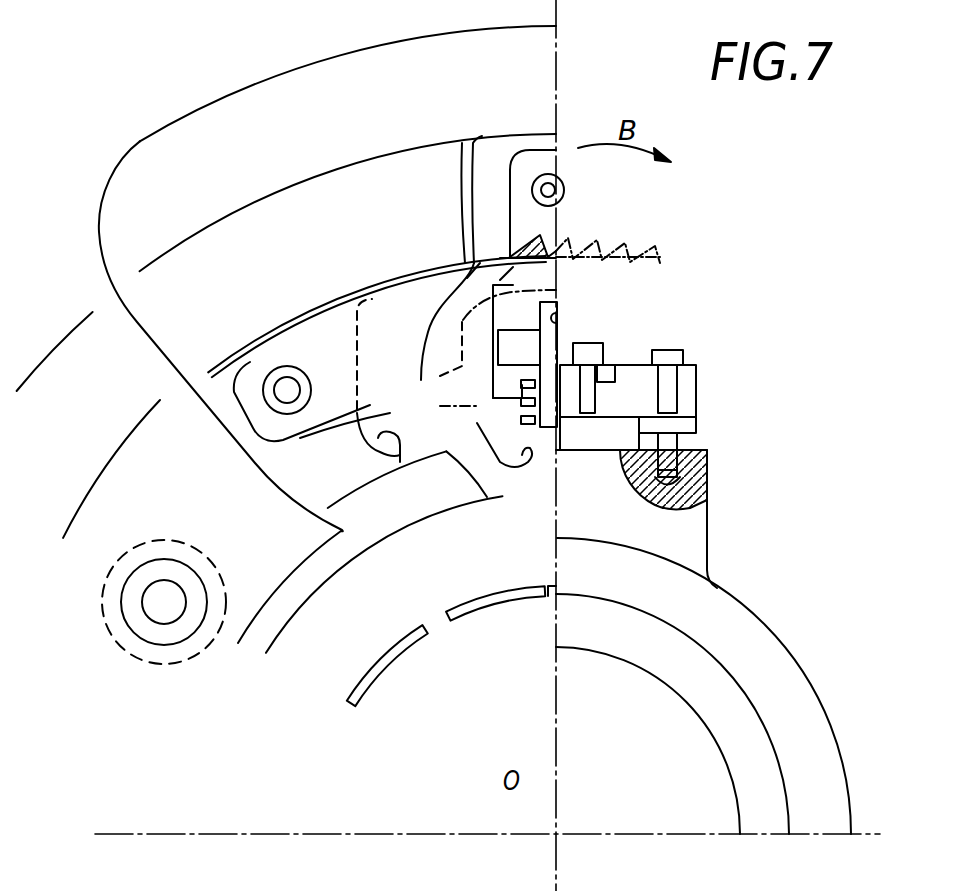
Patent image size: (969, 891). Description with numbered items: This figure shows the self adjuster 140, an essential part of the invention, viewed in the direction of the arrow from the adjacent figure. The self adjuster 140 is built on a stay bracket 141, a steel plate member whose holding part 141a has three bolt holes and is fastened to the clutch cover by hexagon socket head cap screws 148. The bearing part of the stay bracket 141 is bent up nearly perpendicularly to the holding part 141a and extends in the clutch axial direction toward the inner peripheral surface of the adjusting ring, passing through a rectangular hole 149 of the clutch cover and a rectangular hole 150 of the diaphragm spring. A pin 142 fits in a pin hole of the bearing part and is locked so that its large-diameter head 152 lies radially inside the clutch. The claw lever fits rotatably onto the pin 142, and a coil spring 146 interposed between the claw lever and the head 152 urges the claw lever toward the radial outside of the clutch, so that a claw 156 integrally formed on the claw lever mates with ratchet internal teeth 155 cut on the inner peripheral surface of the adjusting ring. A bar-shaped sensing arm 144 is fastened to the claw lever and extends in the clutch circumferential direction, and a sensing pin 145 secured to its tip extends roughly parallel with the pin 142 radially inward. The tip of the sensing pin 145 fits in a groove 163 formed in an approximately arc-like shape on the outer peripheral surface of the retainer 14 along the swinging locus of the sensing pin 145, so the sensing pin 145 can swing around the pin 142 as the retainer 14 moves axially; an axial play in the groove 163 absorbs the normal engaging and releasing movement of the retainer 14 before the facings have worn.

The retainer 14 is at (770, 620).
The self adjuster 140 is at (679, 226).
The stay bracket 141 is at (520, 207).
The holding part 141a is at (409, 312).
The pin 142 is at (548, 340).
The sensing arm 144 is at (687, 391).
The sensing pin 145 is at (665, 443).
The coil spring 146 is at (523, 407).
The hexagon socket head cap screws 148 is at (548, 182).
The rectangular hole 149 is at (398, 460).
The rectangular hole 150 is at (528, 464).
The head 152 is at (477, 480).
The ratchet internal teeth 155 is at (646, 262).
The claw 156 is at (568, 212).
The groove 163 is at (687, 485).